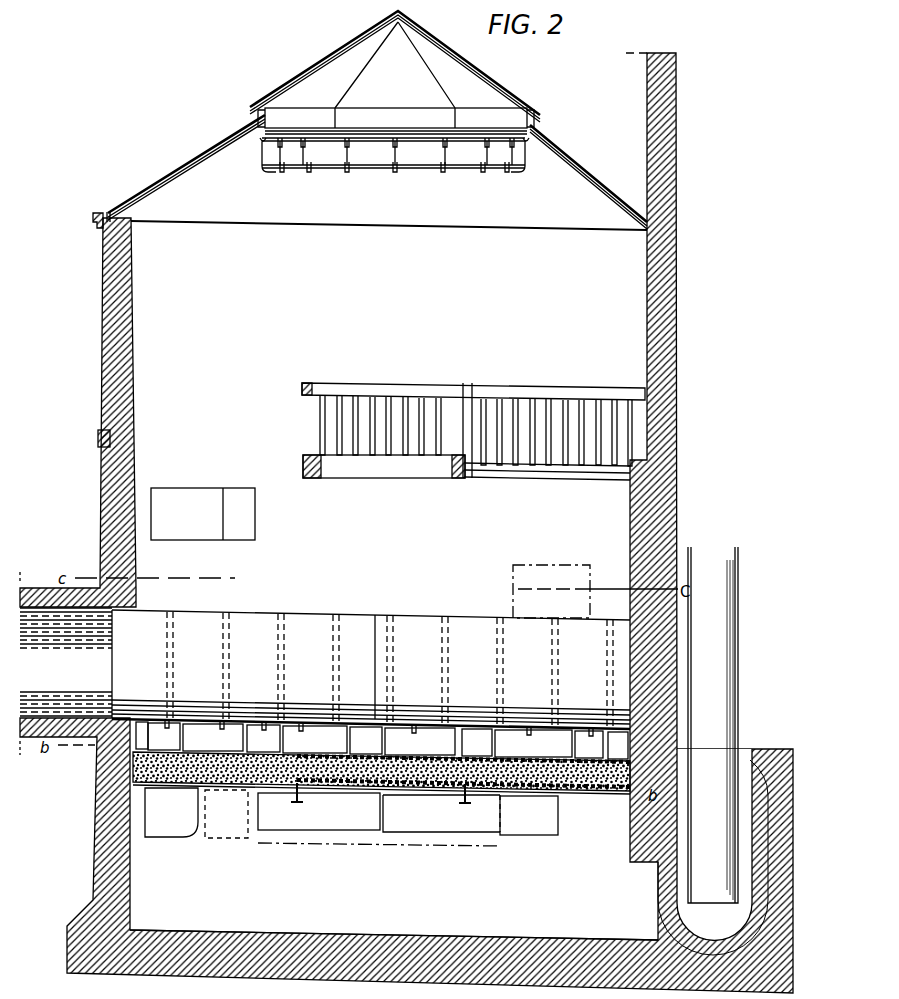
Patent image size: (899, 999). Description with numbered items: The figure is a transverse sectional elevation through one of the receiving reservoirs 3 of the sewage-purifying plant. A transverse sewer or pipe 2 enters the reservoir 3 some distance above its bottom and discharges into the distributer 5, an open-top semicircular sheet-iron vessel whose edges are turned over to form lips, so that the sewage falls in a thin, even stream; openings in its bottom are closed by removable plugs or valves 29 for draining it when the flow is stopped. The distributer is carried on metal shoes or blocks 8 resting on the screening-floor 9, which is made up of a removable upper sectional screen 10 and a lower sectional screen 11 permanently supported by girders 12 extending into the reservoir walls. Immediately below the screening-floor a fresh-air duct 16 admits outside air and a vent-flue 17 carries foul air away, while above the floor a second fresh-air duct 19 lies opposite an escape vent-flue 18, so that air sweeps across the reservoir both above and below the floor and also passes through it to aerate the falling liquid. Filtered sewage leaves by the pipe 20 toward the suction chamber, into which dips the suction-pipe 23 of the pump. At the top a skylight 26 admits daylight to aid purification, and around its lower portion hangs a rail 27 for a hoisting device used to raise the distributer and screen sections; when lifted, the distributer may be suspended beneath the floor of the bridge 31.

The transverse sewer or pipe 2 is at (66, 663).
The receiving chamber or reservoir 3 is at (394, 909).
The distributer 5 is at (371, 684).
The metal shoes or blocks 8 is at (265, 738).
The screening-floor 9 is at (616, 788).
The upper sectional screen 10 is at (589, 745).
The lower sectional screen 11 is at (598, 791).
The girders 12 is at (408, 809).
The fresh-air duct 16 is at (298, 842).
The vent-flue 17 is at (171, 812).
The vent-flue 18 is at (203, 514).
The second fresh-air duct 19 is at (551, 596).
The pipe 20 is at (713, 852).
The suction-pipe 23 is at (713, 725).
The skylight 26 is at (396, 78).
The rail 27 is at (379, 170).
The removable plugs or valves 29 is at (377, 740).
The bridge 31 is at (473, 431).